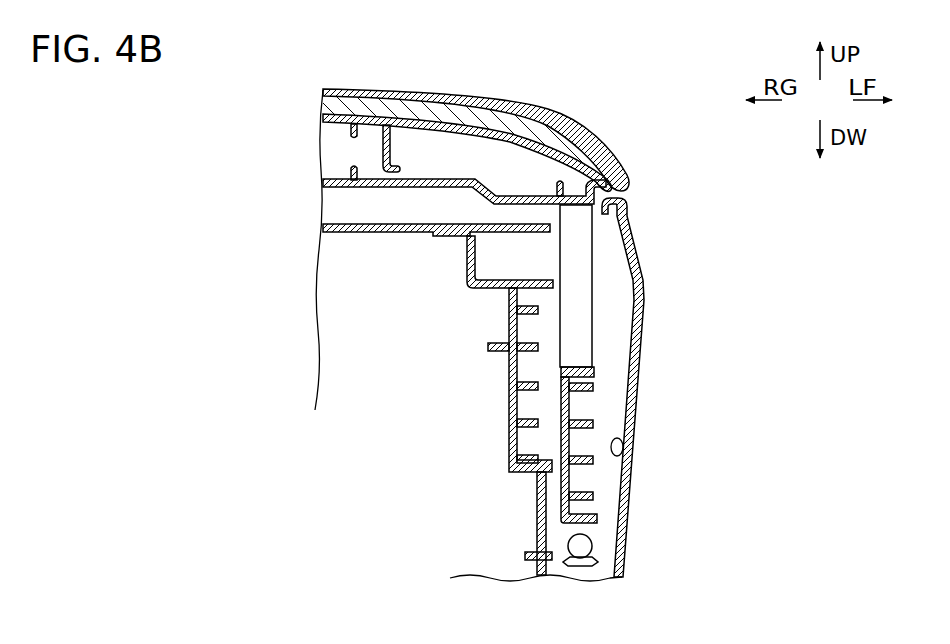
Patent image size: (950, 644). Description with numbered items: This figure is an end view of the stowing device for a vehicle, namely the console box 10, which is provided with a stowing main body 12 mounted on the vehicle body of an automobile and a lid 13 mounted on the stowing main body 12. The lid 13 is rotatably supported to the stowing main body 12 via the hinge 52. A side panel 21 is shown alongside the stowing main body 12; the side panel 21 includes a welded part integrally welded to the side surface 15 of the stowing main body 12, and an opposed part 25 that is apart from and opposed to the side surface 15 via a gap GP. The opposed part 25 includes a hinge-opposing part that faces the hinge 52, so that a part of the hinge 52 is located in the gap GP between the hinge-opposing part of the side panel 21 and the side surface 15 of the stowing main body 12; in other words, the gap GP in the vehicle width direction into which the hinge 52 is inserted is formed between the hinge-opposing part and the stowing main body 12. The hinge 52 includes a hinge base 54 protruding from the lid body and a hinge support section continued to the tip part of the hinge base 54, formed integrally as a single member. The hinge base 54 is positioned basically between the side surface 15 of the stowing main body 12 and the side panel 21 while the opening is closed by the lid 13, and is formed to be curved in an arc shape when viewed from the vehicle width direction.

The console box 10 is at (528, 60).
The lid 13 is at (592, 104).
The hinge base 54 is at (593, 326).
The hinge 52 is at (595, 372).
The gap GP is at (590, 403).
The opposed part 25 is at (622, 442).
The side panel 21 is at (633, 468).
The side surface 15 is at (547, 507).
The stowing main body 12 is at (543, 530).